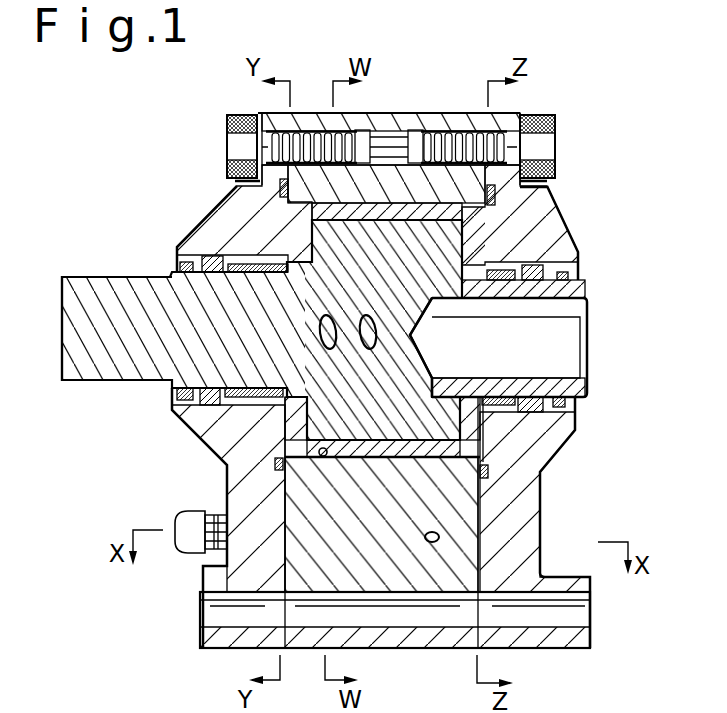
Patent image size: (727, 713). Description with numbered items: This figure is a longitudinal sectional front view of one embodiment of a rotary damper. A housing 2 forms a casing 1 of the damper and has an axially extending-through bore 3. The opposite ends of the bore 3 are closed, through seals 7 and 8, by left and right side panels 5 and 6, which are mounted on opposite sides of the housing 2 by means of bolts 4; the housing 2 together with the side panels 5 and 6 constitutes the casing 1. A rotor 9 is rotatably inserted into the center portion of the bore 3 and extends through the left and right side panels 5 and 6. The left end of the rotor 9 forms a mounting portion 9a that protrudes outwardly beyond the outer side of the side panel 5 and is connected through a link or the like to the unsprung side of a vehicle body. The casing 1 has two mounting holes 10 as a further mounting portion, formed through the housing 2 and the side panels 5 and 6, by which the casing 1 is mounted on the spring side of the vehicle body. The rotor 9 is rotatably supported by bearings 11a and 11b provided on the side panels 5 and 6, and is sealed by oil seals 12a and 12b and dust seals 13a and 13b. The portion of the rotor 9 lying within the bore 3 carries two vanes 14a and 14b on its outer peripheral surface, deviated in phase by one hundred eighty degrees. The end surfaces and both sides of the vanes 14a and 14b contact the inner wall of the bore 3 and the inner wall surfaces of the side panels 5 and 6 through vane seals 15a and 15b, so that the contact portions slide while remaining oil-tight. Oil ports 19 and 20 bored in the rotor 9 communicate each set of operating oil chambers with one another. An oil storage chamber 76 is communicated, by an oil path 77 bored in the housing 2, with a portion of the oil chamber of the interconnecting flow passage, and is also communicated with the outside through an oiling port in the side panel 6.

The casing 1 is at (531, 110).
The housing 2 is at (443, 640).
The bore 3 is at (323, 457).
The bolts 4 is at (237, 118).
The left side panel 5 is at (192, 438).
The right side panel 6 is at (548, 433).
The seal 7 is at (275, 466).
The seal 8 is at (536, 484).
The rotor 9 is at (388, 391).
The mounting portion 9a is at (80, 343).
The mounting holes 10 is at (535, 620).
The bearing 11a is at (222, 275).
The bearing 11b is at (495, 397).
The oil seal 12a is at (212, 386).
The oil seal 12b is at (560, 262).
The dust seal 13a is at (177, 260).
The dust seal 13b is at (559, 397).
The vane 14a is at (456, 250).
The vane 14b is at (395, 458).
The vane seal 15a is at (388, 215).
The vane seal 15b is at (380, 440).
The oil port 19 is at (320, 342).
The oil port 20 is at (372, 322).
The oil storage chamber 76 is at (178, 545).
The oil path 77 is at (424, 538).